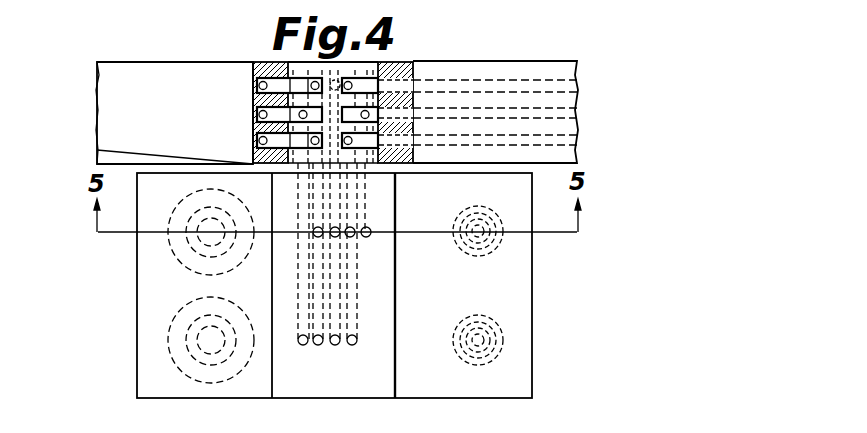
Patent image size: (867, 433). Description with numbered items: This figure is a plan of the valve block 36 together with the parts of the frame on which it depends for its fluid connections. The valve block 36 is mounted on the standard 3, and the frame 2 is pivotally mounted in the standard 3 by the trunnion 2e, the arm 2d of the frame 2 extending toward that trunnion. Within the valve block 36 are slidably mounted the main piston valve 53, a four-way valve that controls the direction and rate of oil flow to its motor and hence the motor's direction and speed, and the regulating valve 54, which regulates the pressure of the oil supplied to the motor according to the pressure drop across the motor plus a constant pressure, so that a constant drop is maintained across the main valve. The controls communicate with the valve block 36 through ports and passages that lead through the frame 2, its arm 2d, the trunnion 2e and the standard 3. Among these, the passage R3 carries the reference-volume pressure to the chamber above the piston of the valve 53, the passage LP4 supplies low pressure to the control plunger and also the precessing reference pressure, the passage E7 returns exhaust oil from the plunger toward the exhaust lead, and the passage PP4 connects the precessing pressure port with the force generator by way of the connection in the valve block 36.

The frame 2 is at (112, 85).
The arm of the frame 2d is at (457, 67).
The trunnion 2e is at (97, 150).
The standard 3 is at (372, 360).
The valve block 36 is at (137, 298).
The main piston valve 53 is at (170, 247).
The regulating valve 54 is at (497, 248).
The passage R3 is at (316, 229).
The passage E7 is at (333, 236).
The passage LP4 is at (352, 236).
The passage PP4 is at (368, 229).